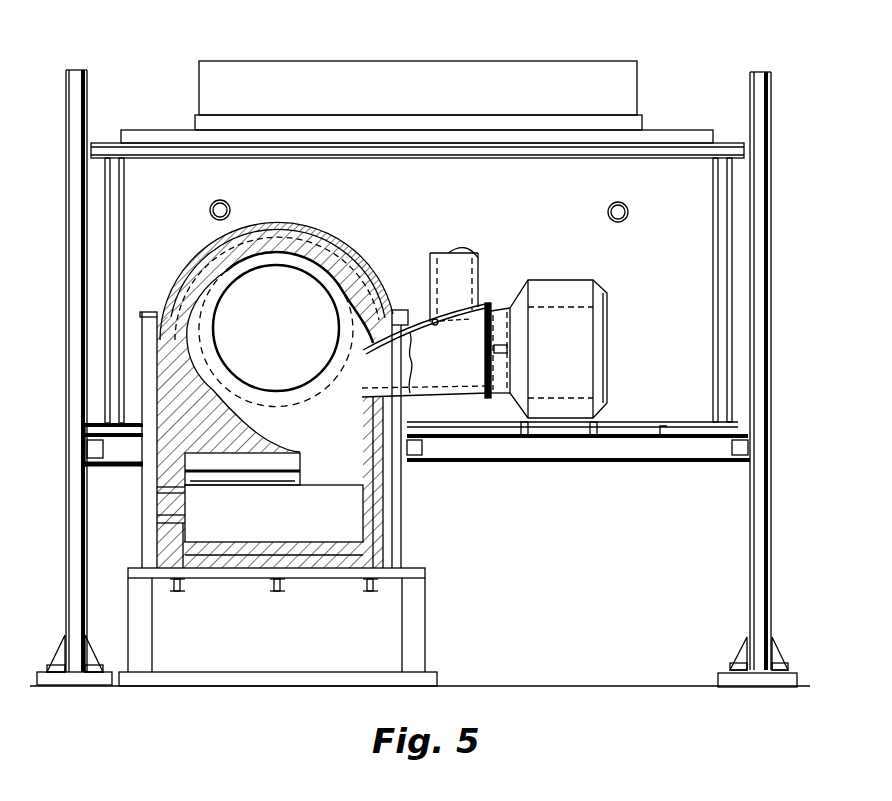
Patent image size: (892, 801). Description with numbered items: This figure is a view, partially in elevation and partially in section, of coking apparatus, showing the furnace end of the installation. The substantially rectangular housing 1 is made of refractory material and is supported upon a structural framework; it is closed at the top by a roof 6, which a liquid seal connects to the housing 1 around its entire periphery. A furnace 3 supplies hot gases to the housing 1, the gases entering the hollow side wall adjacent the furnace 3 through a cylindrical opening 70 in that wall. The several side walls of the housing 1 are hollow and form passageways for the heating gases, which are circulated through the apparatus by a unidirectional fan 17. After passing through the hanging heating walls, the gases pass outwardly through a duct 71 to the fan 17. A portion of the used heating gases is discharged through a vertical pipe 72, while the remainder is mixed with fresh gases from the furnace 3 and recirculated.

The housing 1 is at (680, 177).
The furnace 3 is at (345, 505).
The roof 6 is at (203, 138).
The unidirectional fan 17 is at (489, 398).
The cylindrical opening 70 is at (300, 283).
The duct 71 is at (575, 303).
The vertical pipe 72 is at (460, 282).